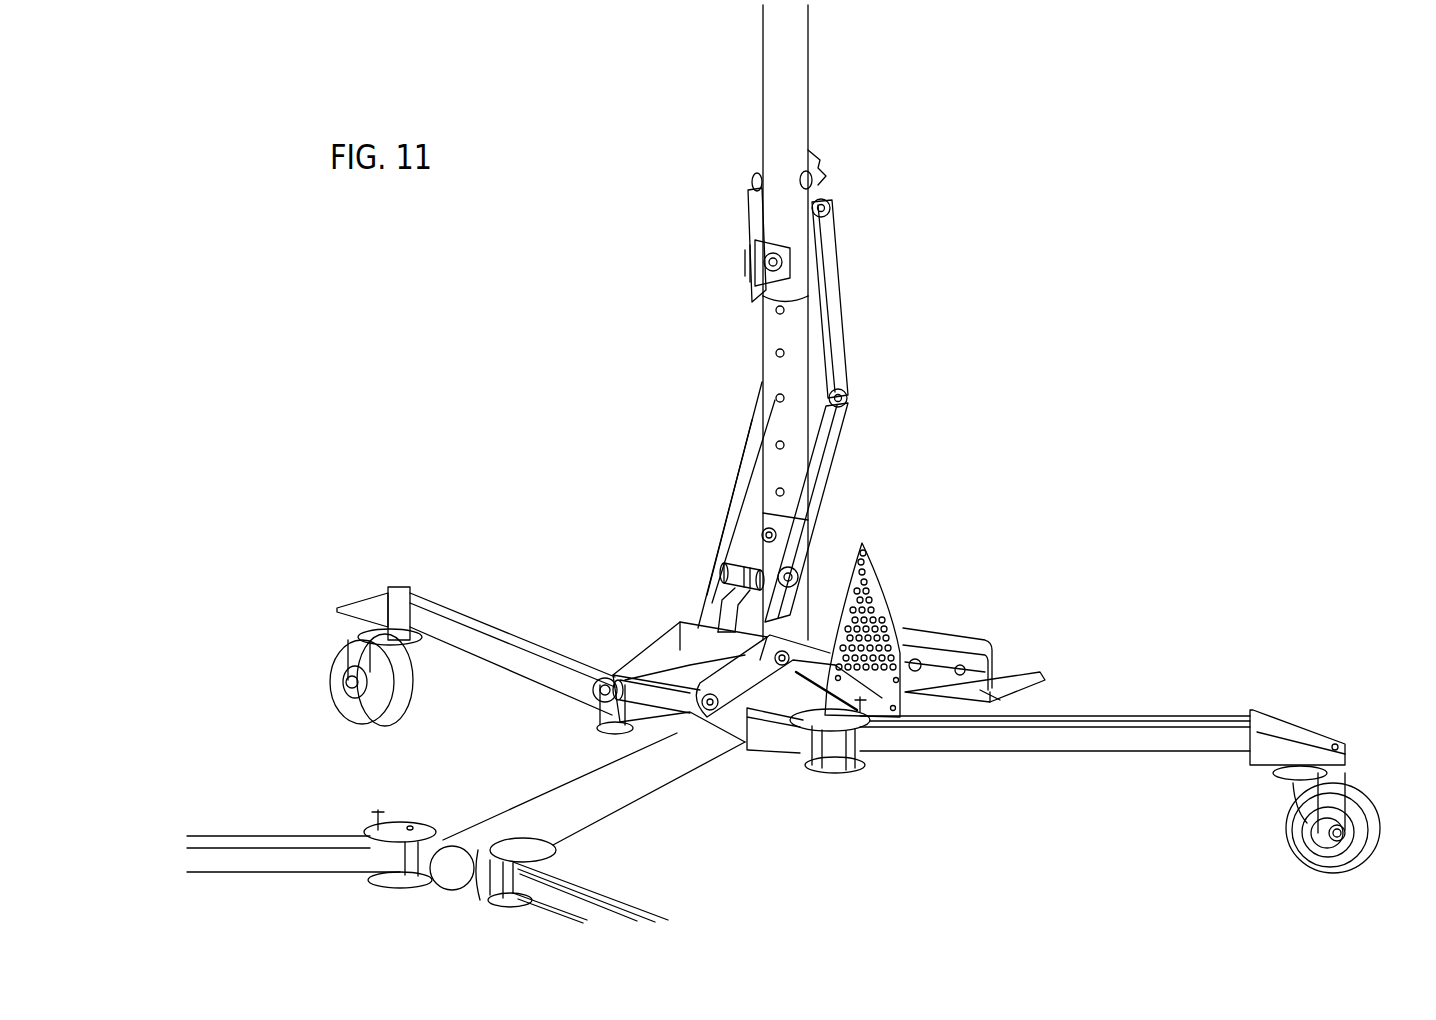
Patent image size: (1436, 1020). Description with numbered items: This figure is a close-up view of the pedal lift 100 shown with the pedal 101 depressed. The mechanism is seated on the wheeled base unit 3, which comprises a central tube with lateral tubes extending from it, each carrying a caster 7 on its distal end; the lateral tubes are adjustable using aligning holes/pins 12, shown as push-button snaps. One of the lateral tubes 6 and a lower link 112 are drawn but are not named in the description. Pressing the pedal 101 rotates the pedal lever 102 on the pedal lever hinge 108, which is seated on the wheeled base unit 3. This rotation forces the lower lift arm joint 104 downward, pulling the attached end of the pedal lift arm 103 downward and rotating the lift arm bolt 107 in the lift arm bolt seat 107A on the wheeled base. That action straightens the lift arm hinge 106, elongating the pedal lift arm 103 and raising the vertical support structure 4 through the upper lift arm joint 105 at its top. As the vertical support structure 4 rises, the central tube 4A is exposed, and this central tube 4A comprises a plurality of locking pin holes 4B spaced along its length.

The vertical support structure 4 is at (783, 100).
The central tube 4A is at (775, 336).
The locking pin holes 4B is at (778, 355).
The upper lift arm joint 105 is at (830, 210).
The pedal lift arm 103 is at (835, 328).
The lift arm hinge 106 is at (847, 398).
The lift arm bolt 107 is at (778, 533).
The link bar 112 is at (762, 535).
The lift arm bolt seat 107A is at (740, 600).
The pedal lever hinge 108 is at (635, 688).
The lower lift arm joint 104 is at (782, 663).
The pedal lever 102 is at (810, 657).
The pedal 101 is at (1015, 672).
The pedal lift 100 is at (960, 597).
The arm 6 is at (1155, 737).
The caster 7 is at (397, 697).
The aligning holes/pins 12 is at (410, 830).
The wheeled base unit 3 is at (633, 788).